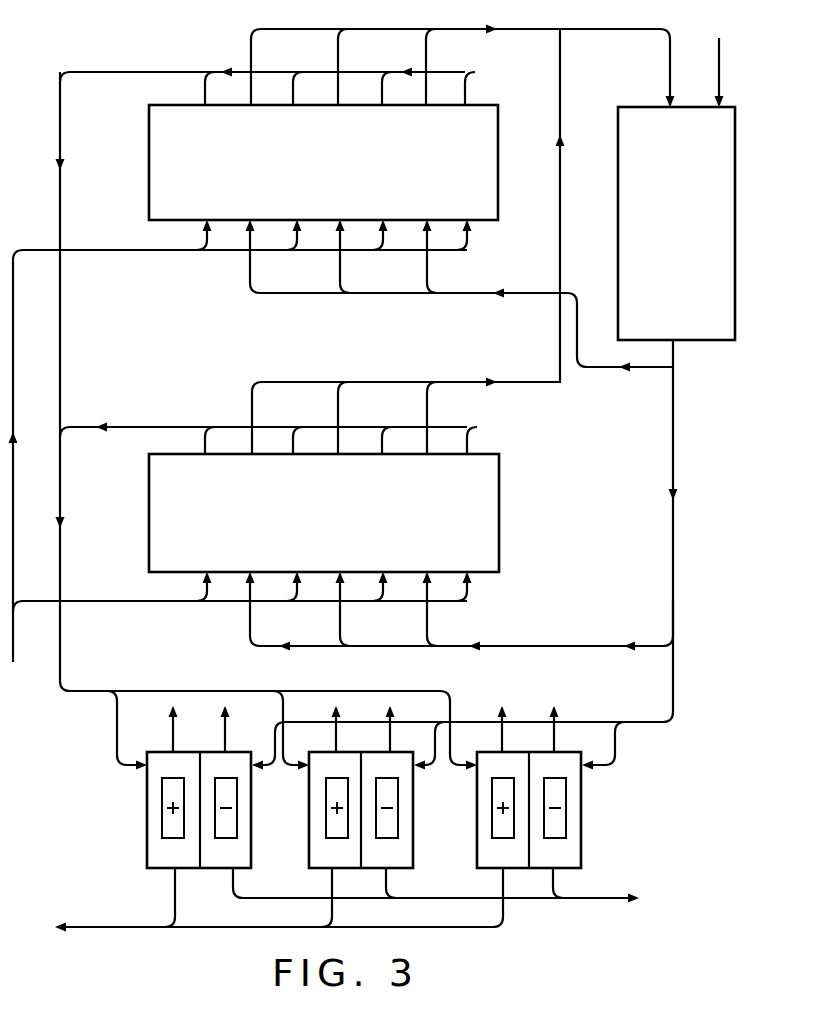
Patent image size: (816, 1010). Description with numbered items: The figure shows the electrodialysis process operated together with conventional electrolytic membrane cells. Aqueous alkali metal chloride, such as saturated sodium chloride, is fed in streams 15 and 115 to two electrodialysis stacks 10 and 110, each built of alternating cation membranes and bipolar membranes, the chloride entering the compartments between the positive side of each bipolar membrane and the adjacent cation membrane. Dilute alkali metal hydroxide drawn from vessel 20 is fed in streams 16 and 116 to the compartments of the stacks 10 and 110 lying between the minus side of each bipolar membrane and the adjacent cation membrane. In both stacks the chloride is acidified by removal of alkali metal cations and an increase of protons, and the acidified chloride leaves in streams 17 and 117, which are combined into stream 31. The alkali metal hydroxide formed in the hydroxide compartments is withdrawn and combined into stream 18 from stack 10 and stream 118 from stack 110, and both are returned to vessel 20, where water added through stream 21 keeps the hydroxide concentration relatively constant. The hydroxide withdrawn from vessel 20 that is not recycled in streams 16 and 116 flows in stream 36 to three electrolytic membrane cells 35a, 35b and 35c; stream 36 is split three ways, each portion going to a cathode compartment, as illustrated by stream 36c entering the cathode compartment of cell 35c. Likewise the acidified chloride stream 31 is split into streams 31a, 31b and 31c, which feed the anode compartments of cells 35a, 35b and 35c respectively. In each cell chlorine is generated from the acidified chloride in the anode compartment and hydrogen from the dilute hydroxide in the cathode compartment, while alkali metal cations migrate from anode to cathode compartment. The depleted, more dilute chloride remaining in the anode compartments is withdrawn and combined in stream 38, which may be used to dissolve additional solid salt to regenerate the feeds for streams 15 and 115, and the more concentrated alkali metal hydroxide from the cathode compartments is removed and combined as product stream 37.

The electrodialysis stack 10 is at (330, 162).
The electrodialysis stack 110 is at (340, 519).
The vessel 20 is at (676, 196).
The stream 15 is at (93, 250).
The stream 16 is at (461, 293).
The stream 17 is at (148, 72).
The stream 18 is at (467, 30).
The stream 21 is at (718, 70).
The stream 31 is at (63, 630).
The stream 31a is at (113, 739).
The stream 31b is at (293, 770).
The stream 31c is at (455, 703).
The electrolytic membrane cell 35a is at (147, 833).
The electrolytic membrane cell 35b is at (310, 823).
The electrolytic membrane cell 35c is at (478, 826).
The stream 36 is at (676, 666).
The stream 36c is at (620, 745).
The product stream 37 is at (587, 897).
The stream 38 is at (112, 926).
The stream 115 is at (130, 600).
The stream 116 is at (508, 645).
The stream 117 is at (152, 427).
The stream 118 is at (448, 381).